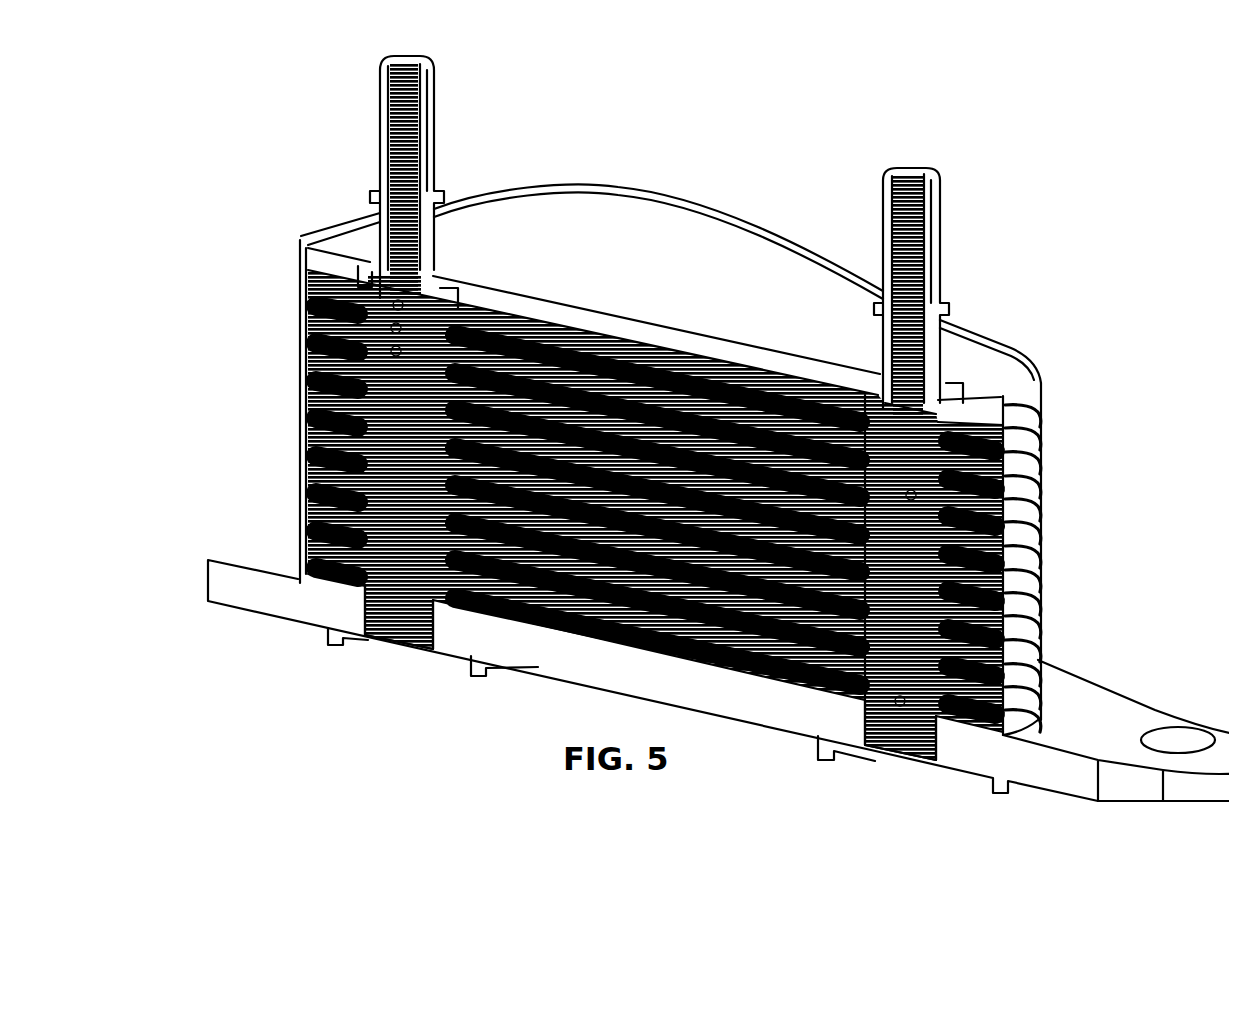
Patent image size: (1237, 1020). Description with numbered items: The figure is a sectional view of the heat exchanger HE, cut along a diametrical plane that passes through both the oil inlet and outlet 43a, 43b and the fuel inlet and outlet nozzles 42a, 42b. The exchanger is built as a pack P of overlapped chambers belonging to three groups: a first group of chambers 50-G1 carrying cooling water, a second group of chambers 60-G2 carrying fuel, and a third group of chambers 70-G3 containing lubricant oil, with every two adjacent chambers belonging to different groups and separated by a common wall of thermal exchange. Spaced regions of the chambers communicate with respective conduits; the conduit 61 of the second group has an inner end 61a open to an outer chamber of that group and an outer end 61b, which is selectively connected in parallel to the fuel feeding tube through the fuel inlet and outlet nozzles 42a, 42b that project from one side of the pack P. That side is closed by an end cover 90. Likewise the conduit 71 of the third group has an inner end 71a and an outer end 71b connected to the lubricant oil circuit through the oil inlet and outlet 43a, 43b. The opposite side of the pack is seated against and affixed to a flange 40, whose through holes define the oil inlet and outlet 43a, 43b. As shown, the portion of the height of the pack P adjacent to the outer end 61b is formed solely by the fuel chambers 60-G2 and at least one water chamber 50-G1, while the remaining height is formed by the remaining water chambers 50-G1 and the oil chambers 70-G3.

The heat exchanger HE is at (966, 282).
The pack of chambers P is at (290, 475).
The end cover 90 is at (636, 216).
The fuel inlet nozzle 42a is at (935, 203).
The fuel outlet nozzle 42b is at (429, 100).
The first group of chambers 50-G1 is at (327, 337).
The second group of chambers 60-G2 is at (645, 355).
The third group of chambers 70-G3 is at (327, 470).
The conduit of the second group 61 is at (389, 320).
The inner end of the second-group conduit 61a is at (390, 343).
The outer end of the second-group conduit 61b is at (390, 297).
The conduit of the third group 71 is at (902, 575).
The inner end of the third-group conduit 71a is at (905, 487).
The outer end of the third-group conduit 71b is at (892, 693).
The lubricant oil inlet 43a is at (880, 740).
The lubricant oil outlet 43b is at (367, 608).
The flange 40 is at (1116, 685).